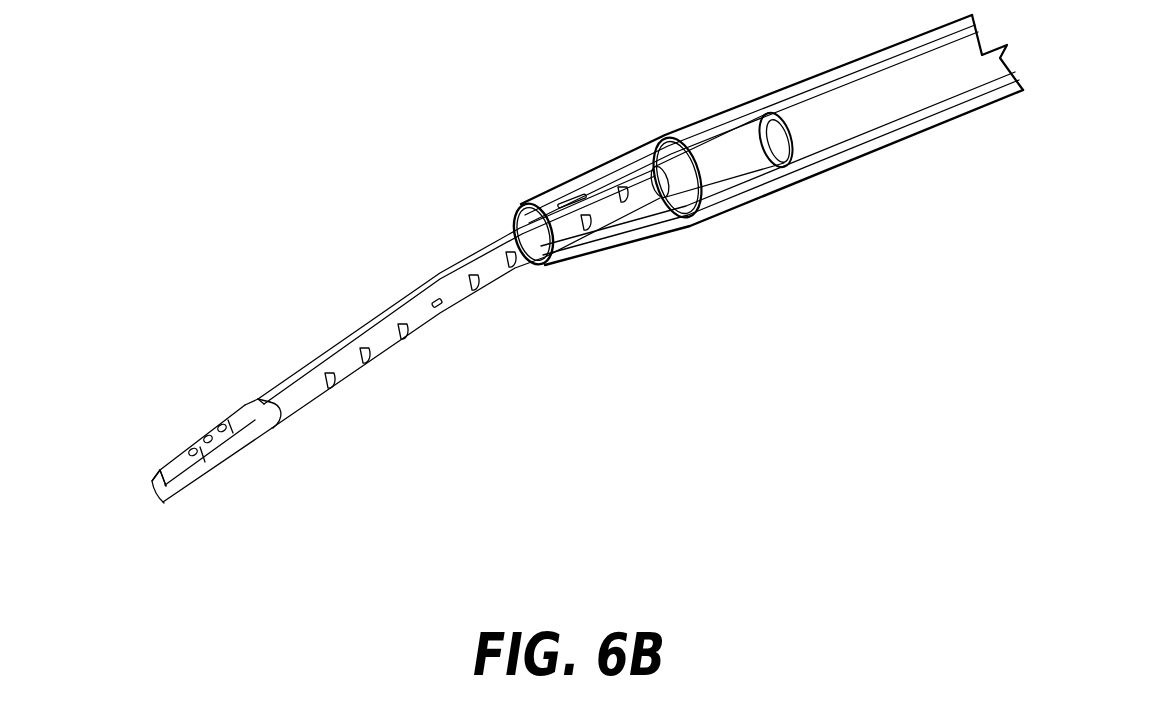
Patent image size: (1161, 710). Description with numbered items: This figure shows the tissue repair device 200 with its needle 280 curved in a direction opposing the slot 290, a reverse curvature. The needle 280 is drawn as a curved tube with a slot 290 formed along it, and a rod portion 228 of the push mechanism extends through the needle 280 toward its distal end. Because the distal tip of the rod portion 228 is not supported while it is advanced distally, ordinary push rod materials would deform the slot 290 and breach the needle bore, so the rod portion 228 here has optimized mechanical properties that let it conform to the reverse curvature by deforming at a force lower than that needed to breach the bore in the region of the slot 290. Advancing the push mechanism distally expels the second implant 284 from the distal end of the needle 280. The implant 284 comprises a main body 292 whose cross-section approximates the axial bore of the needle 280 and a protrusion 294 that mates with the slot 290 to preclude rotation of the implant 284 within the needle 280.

The device 200 is at (413, 101).
The needle 280 is at (387, 338).
The slot 290 is at (282, 380).
The rod portion 228 is at (288, 398).
The main body 292 is at (225, 450).
The protrusion 294 is at (205, 436).
The second implant 284 is at (170, 468).